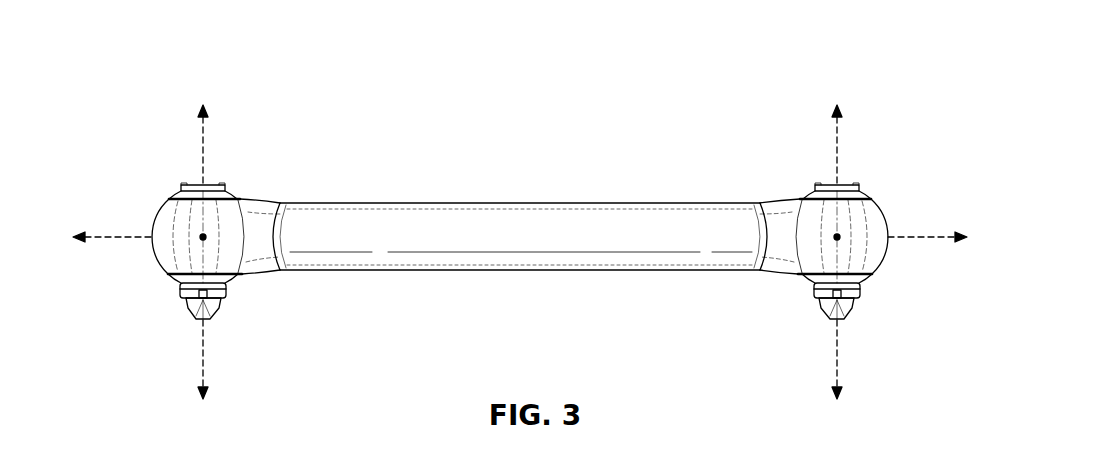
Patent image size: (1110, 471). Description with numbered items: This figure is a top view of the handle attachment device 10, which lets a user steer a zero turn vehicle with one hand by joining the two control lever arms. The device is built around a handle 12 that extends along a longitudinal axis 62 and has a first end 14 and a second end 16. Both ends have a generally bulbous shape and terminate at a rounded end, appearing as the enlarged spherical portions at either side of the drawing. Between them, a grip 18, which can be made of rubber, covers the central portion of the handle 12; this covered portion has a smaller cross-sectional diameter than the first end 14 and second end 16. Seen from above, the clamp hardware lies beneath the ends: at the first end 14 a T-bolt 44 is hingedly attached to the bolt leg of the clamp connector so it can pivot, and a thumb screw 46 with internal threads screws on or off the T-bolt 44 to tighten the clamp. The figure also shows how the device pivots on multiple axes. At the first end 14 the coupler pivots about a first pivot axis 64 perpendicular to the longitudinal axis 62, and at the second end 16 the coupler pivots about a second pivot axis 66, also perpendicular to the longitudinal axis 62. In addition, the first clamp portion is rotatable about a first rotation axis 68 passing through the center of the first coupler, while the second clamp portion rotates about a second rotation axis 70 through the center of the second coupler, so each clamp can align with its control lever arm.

The handle attachment device 10 is at (297, 72).
The handle 12 is at (322, 183).
The first end 14 is at (177, 233).
The second end 16 is at (865, 218).
The grip 18 is at (533, 220).
The T-bolt 44 is at (203, 295).
The thumb screw 46 is at (203, 312).
The longitudinal axis 62 is at (922, 240).
The first pivot axis 64 is at (203, 135).
The second pivot axis 66 is at (835, 137).
The first rotation axis 68 is at (203, 237).
The second rotation axis 70 is at (837, 237).